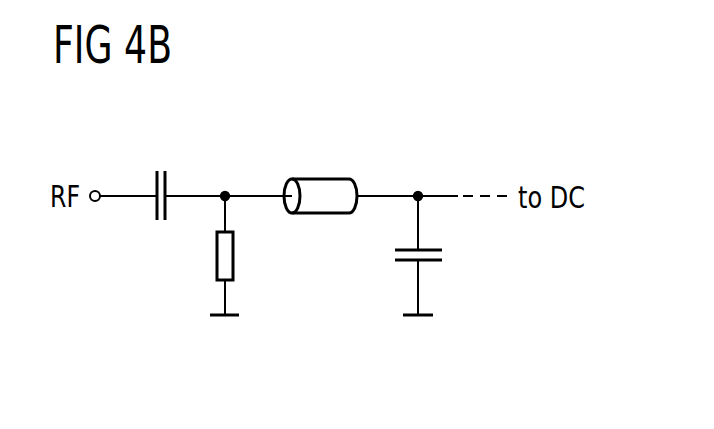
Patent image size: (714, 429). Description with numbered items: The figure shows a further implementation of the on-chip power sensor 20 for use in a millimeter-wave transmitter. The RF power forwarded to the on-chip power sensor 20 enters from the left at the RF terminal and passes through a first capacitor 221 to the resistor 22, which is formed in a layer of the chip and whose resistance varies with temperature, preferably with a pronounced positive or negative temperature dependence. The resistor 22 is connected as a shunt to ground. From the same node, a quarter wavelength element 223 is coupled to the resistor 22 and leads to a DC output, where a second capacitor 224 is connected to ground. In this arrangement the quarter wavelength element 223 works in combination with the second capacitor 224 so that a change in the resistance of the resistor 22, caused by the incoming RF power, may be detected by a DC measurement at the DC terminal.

The on-chip power sensor 20 is at (475, 112).
The resistor 22 is at (217, 256).
The first capacitor 221 is at (158, 168).
The quarter wavelength element 223 is at (318, 176).
The second capacitor 224 is at (420, 288).